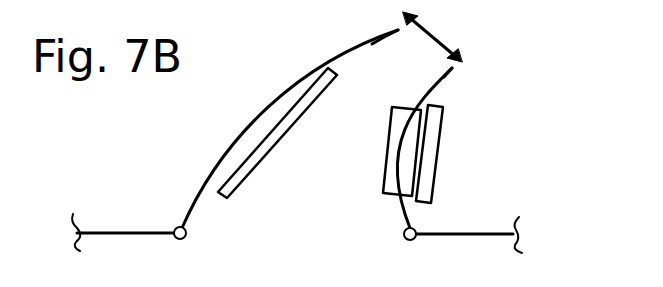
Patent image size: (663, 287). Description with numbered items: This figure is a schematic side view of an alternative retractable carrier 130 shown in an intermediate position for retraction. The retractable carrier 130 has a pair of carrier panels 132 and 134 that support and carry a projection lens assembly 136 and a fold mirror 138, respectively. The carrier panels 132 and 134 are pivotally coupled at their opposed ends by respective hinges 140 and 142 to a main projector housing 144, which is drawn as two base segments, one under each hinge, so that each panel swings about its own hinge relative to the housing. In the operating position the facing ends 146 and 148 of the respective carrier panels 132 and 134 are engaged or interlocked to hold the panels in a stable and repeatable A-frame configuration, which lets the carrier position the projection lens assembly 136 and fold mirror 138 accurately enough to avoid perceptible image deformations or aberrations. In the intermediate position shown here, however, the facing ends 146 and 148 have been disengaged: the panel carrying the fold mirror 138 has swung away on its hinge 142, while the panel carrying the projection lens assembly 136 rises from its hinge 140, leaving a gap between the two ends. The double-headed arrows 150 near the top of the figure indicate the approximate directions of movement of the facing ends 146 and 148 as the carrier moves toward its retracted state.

The retractable carrier 130 is at (535, 50).
The carrier panel 132 is at (452, 82).
The carrier panel 134 is at (288, 90).
The projection lens assembly 136 is at (443, 140).
The fold mirror 138 is at (283, 135).
The hinge 140 is at (414, 240).
The hinge 142 is at (184, 239).
The main projector housing 144 is at (152, 233).
The facing end 146 is at (398, 30).
The facing end 148 is at (450, 68).
The arrows 150 is at (438, 32).